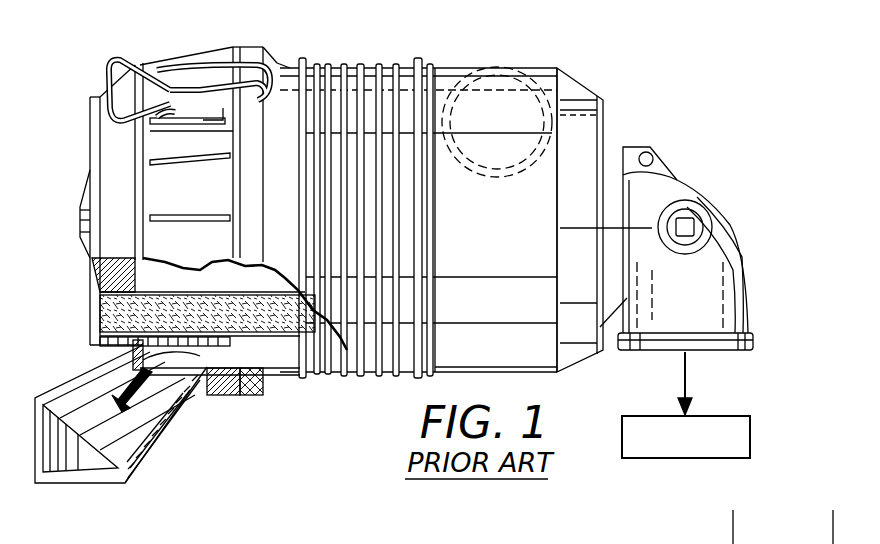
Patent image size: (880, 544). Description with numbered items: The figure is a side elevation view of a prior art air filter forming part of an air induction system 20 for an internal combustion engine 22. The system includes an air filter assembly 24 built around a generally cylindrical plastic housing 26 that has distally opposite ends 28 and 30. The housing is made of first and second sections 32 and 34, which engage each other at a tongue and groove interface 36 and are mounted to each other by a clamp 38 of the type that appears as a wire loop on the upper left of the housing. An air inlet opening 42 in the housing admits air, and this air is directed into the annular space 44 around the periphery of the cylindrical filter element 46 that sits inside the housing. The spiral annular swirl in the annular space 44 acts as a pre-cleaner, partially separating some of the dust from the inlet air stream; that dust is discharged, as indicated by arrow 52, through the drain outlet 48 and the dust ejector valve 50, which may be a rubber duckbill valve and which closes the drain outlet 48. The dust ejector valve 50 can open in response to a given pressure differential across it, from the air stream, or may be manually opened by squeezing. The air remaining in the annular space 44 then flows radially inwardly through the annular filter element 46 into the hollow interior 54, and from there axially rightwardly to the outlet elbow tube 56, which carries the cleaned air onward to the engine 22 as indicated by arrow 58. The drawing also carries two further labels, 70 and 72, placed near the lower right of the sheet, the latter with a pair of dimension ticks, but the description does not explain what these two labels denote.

The air induction system 20 is at (358, 50).
The internal combustion engine 22 is at (750, 438).
The air filter assembly 24 is at (336, 58).
The generally cylindrical plastic housing 26 is at (462, 67).
The housing end 28 is at (607, 113).
The housing end 30 is at (90, 126).
The first housing section 32 is at (292, 375).
The second housing section 34 is at (227, 393).
The tongue and groove interface 36 is at (267, 393).
The clamp 38 is at (207, 70).
The air inlet opening 42 is at (544, 80).
The annular space 44 is at (320, 357).
The cylindrical filter element 46 is at (100, 313).
The drain outlet 48 is at (168, 437).
The dust ejector valve 50 is at (73, 485).
The dust discharge arrow 52 is at (167, 437).
The hollow interior 54 is at (157, 277).
The outlet elbow tube 56 is at (732, 313).
The engine flow arrow 58 is at (690, 373).
The gasket 70 is at (688, 543).
The flange width dimension 72 is at (832, 530).